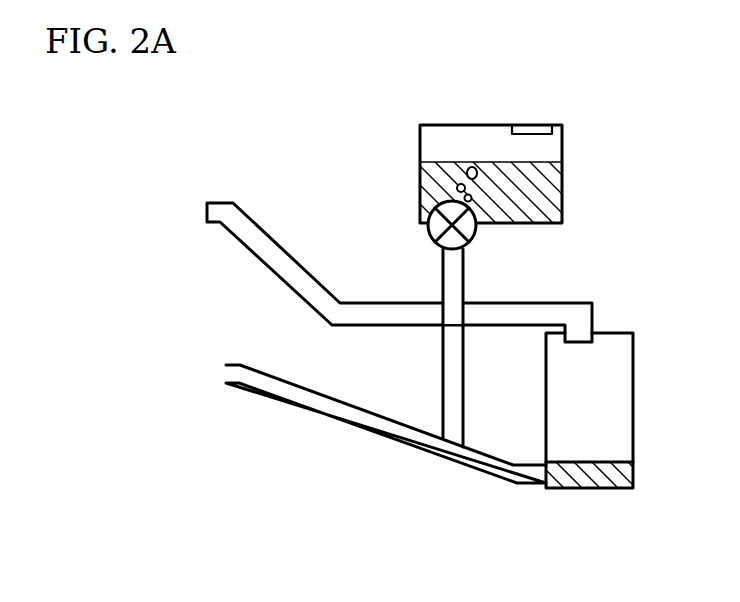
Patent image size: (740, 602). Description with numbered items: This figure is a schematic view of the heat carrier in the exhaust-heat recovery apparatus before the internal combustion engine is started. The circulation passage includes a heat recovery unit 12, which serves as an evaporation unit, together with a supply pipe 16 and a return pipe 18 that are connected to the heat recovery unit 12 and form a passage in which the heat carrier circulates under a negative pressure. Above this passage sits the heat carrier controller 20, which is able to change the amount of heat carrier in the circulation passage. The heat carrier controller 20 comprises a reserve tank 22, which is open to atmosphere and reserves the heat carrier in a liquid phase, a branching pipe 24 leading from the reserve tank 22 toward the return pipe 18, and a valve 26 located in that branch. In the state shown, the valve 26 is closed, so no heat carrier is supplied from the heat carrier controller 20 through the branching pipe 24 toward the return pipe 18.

The heat recovery unit 12 is at (590, 488).
The supply pipe 16 is at (297, 257).
The return pipe 18 is at (272, 397).
The heat carrier controller 20 is at (430, 317).
The reserve tank 22 is at (484, 125).
The branching pipe 24 is at (463, 266).
The valve 26 is at (474, 240).